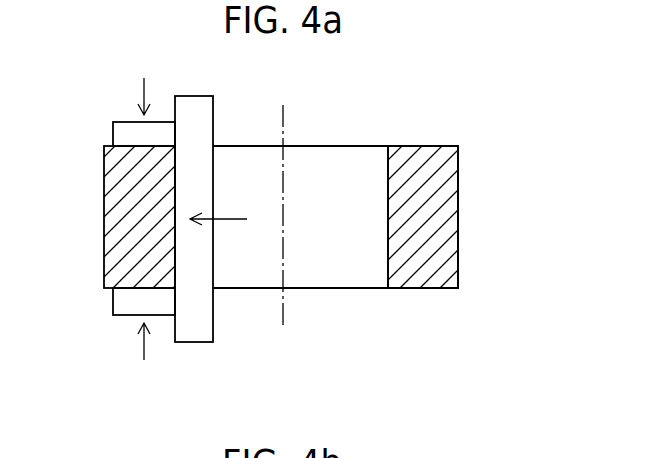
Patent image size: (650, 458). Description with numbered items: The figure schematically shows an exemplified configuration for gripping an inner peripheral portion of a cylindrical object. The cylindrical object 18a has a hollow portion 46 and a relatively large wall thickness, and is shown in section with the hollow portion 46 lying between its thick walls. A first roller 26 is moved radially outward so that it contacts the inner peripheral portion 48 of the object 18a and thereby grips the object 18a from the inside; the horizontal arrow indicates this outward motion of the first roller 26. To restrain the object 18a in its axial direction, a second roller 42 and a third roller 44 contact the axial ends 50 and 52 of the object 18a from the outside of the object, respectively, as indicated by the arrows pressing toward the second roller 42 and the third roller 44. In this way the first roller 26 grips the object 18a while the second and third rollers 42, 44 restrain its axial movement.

The cylindrical object 18a is at (475, 178).
The first roller 26 is at (214, 113).
The second roller 42 is at (112, 131).
The third roller 44 is at (112, 292).
The hollow portion 46 is at (321, 188).
The inner peripheral portion 48 is at (388, 253).
The axial end 50 is at (438, 146).
The axial end 52 is at (423, 280).